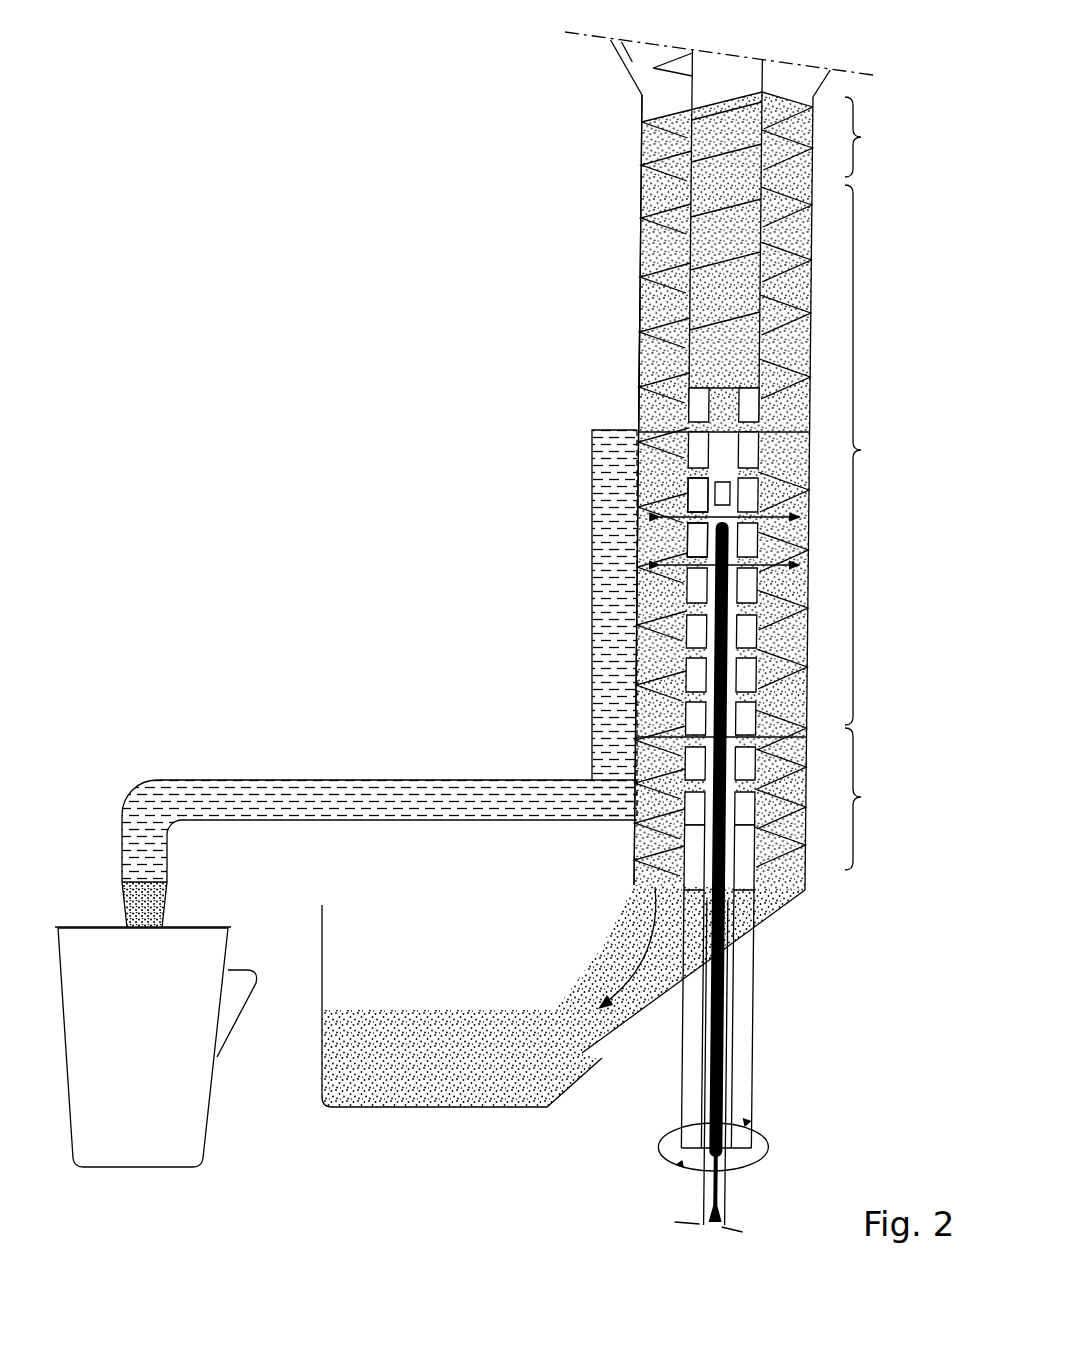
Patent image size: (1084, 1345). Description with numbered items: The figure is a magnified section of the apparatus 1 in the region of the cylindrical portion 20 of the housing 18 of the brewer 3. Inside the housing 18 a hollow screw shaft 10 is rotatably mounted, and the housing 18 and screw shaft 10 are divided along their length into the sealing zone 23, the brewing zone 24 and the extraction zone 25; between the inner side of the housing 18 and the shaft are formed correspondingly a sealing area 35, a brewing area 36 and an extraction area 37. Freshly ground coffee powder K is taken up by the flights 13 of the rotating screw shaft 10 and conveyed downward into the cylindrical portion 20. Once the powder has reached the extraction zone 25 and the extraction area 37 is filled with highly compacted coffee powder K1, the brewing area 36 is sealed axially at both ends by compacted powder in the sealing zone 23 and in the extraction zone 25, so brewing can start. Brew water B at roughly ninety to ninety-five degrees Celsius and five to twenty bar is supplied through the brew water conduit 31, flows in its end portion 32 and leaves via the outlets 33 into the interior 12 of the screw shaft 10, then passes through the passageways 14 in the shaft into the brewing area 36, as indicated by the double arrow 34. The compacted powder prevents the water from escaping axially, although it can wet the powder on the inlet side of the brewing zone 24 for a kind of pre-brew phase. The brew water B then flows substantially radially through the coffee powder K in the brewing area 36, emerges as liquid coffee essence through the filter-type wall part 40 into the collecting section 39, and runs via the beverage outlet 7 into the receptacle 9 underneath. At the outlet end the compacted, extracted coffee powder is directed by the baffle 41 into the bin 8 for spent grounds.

The apparatus 1 is at (458, 386).
The brewer 3 is at (552, 302).
The beverage outlet 7 is at (155, 873).
The bin 8 is at (423, 1093).
The receptacle 9 is at (141, 1050).
The screw shaft 10 is at (740, 345).
The interior of the screw shaft 12 is at (762, 400).
The flights 13 is at (640, 275).
The passageways 14 is at (762, 508).
The housing 18 is at (640, 250).
The cylindrical portion 20 is at (636, 377).
The sealing zone 23 is at (875, 137).
The brewing zone 24 is at (872, 455).
The extraction zone 25 is at (875, 799).
The brew water conduit 31 is at (720, 1188).
The end portion 32 is at (700, 493).
The outlets 33 is at (712, 535).
The double arrow 34 is at (790, 520).
The sealing area 35 is at (767, 130).
The brewing area 36 is at (773, 636).
The extraction area 37 is at (783, 783).
The collecting section 39 is at (617, 608).
The filter-type wall part 40 is at (630, 668).
The baffle 41 is at (762, 922).
The brew water B is at (722, 997).
The coffee powder K is at (790, 287).
The highly compacted coffee powder K1 is at (783, 820).